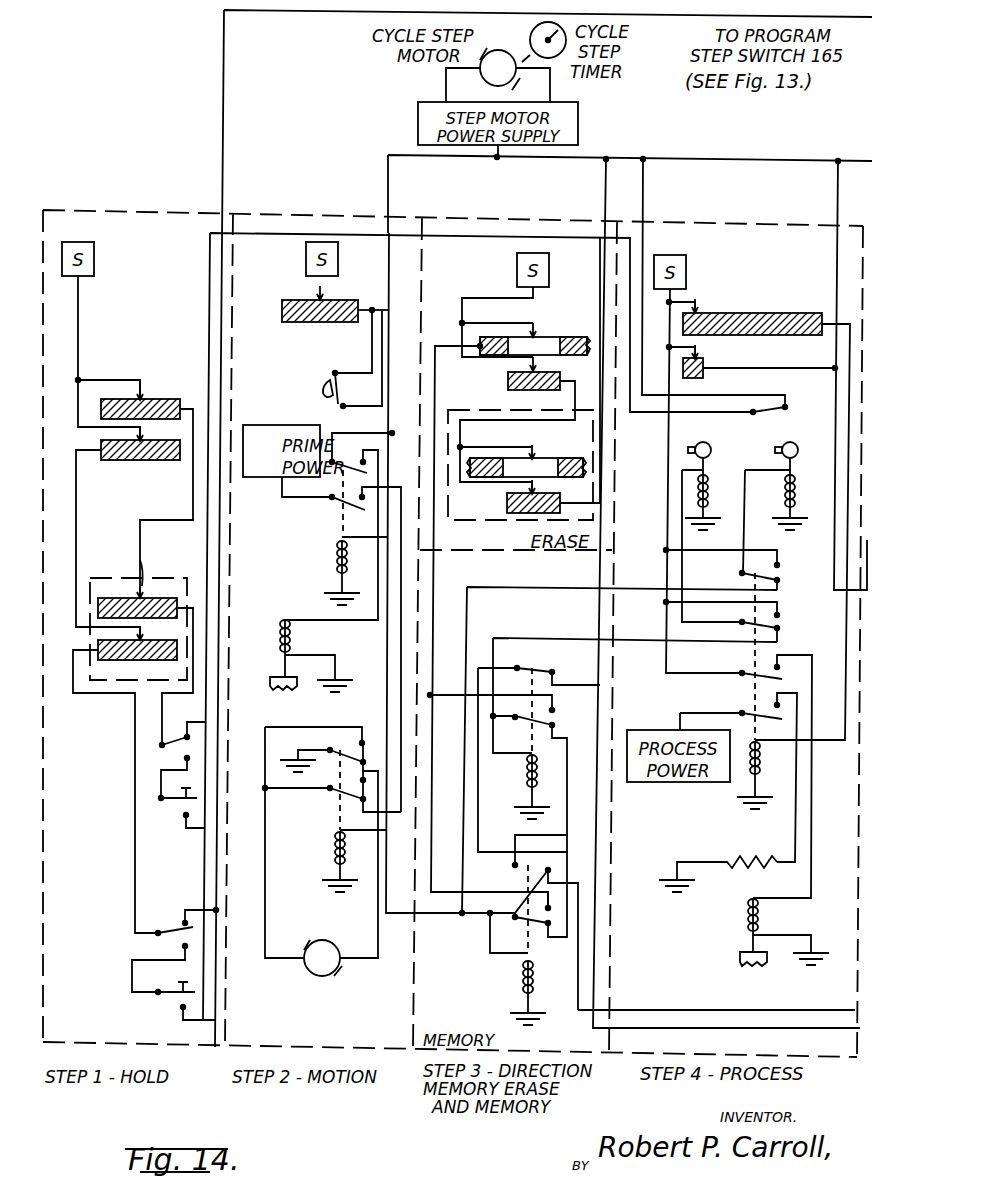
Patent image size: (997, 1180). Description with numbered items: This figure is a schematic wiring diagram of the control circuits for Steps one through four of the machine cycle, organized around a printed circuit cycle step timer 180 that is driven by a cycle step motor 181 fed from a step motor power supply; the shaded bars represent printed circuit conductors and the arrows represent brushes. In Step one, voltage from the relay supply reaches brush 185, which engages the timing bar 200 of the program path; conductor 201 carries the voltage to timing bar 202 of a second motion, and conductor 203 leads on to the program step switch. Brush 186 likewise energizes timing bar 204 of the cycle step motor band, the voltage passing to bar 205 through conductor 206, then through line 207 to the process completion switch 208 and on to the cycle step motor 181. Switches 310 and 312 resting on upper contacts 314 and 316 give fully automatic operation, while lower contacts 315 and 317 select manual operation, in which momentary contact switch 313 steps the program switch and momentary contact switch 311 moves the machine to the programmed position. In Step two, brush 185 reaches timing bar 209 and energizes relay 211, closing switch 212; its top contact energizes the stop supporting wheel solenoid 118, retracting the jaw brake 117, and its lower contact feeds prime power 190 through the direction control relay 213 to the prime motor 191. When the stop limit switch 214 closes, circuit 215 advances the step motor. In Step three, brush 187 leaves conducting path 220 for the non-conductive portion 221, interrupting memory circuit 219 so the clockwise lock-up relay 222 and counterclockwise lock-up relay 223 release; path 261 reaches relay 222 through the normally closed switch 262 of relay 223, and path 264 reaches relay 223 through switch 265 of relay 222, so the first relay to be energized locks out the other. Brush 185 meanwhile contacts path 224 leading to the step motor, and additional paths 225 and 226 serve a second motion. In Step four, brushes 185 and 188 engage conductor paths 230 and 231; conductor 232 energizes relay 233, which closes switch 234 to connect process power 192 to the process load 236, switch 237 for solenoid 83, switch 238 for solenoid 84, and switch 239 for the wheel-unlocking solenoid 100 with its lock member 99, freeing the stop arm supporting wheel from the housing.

The cycle step timer 180 is at (532, 36).
The cycle step motor 181 is at (480, 80).
The conductor 203 is at (218, 186).
The circuit 215 is at (386, 198).
The line 207 is at (209, 324).
The brush 185 is at (143, 438).
The brush 186 is at (146, 390).
The timing bar 204 is at (122, 394).
The timing bar 200 is at (152, 461).
The conductor 201 is at (76, 508).
The timing bar 205 is at (132, 578).
The conductor 206 is at (145, 590).
The timing bar 202 is at (160, 660).
The timing bar 209 is at (304, 322).
The stop limit switch 214 is at (330, 372).
The source of prime power 190 is at (277, 425).
The switch 212 is at (330, 510).
The relay 211 is at (336, 560).
The stop supporting wheel solenoid 118 is at (281, 628).
The jaw brake 117 is at (278, 690).
The switch 310 is at (160, 749).
The momentary contact switch 311 is at (158, 803).
The switch 312 is at (156, 930).
The momentary contact switch 313 is at (156, 989).
The upper contact 314 is at (192, 738).
The lower contact 315 is at (192, 759).
The upper contact 316 is at (183, 920).
The lower contact 317 is at (190, 946).
The prime motor direction control relay 213 is at (334, 850).
The prime motor 191 is at (312, 975).
The conducting path 220 is at (500, 337).
The brush 187 is at (537, 330).
The non-conductive portion 221 is at (556, 338).
The path 224 is at (512, 386).
The additional memory path 225 is at (566, 458).
The additional step motor path 226 is at (507, 505).
The memory circuit 219 is at (440, 588).
The normally closed top switch 265 is at (543, 672).
The clockwise lock-up relay 222 is at (528, 778).
The normally closed top switch 262 is at (522, 866).
The counterclockwise lock-up relay 223 is at (522, 984).
The brush 188 is at (699, 308).
The conductor path 231 is at (720, 312).
The conductor 232 is at (848, 332).
The conductor path 230 is at (706, 372).
The process completion switch 208 is at (776, 414).
The solenoid 84 is at (708, 486).
The solenoid 83 is at (794, 490).
The switch 237 is at (780, 574).
The switch 238 is at (780, 622).
The switch 239 is at (748, 672).
The switch 234 is at (748, 711).
The relay 233 is at (766, 762).
The source of process power 192 is at (690, 782).
The process load 236 is at (752, 856).
The solenoid coil 100 is at (746, 926).
The solenoid armature 99 is at (748, 964).
The path 261 is at (822, 1010).
The path 264 is at (796, 1032).